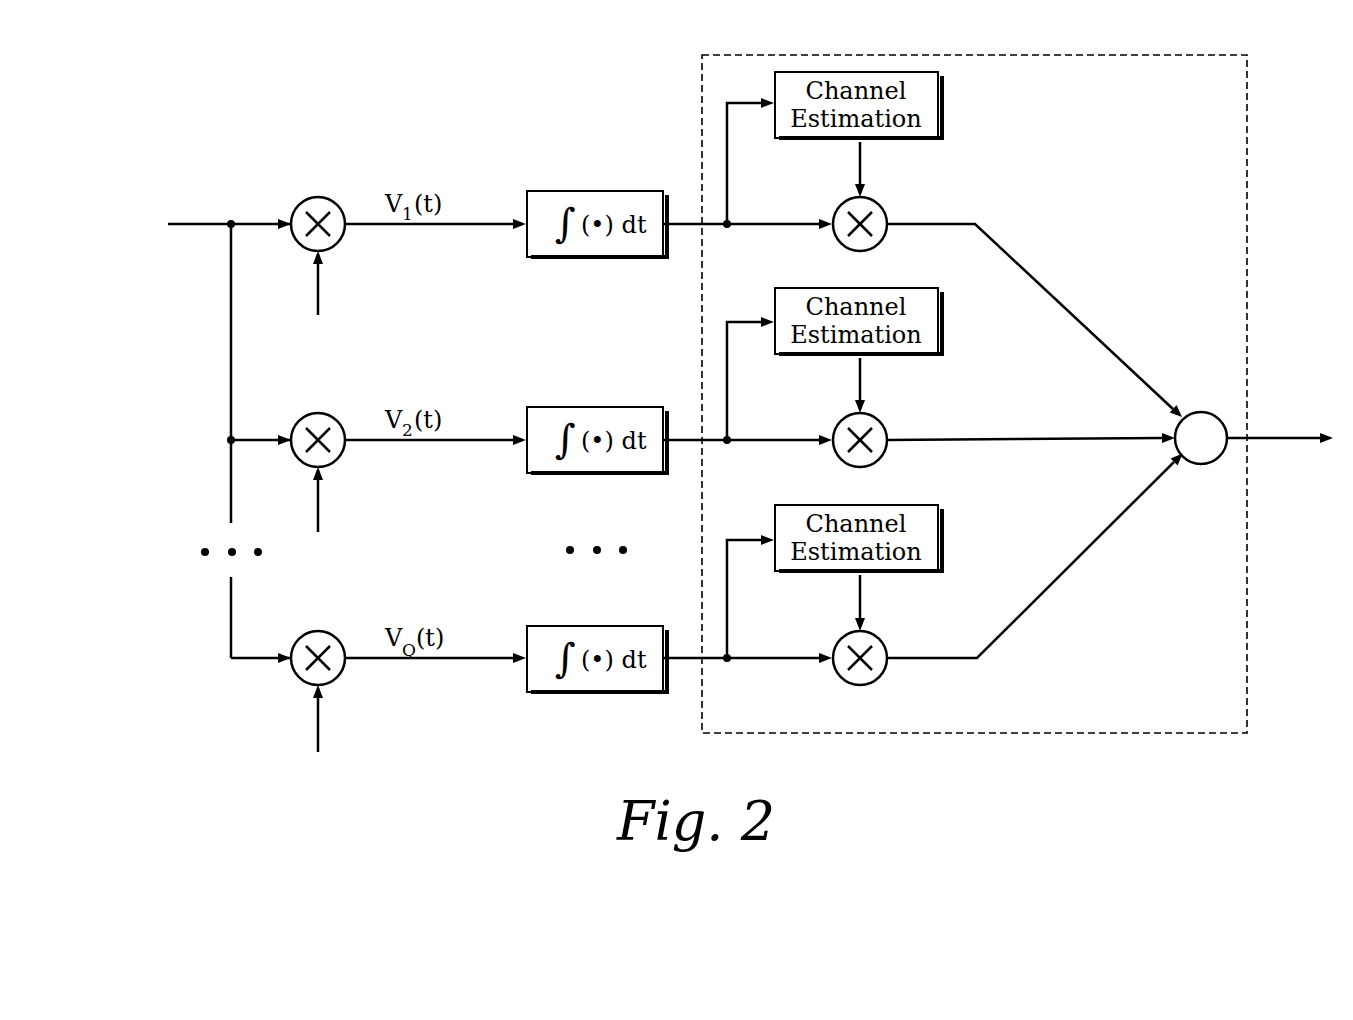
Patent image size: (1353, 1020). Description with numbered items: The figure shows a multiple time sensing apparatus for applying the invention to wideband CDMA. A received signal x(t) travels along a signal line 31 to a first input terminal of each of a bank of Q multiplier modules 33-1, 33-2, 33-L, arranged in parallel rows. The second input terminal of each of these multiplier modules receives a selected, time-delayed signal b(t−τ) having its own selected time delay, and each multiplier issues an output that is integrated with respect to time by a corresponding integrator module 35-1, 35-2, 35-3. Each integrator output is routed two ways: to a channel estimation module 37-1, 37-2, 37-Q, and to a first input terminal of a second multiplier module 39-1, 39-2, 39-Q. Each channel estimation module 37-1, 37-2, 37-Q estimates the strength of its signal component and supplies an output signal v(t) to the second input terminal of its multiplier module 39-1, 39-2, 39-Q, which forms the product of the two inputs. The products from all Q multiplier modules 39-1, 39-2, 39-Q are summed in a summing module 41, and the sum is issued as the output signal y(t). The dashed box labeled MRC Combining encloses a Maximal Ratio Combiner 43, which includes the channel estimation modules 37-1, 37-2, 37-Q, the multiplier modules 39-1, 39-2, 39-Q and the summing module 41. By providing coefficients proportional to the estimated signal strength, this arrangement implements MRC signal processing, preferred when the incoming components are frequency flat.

The signal line 31 is at (192, 229).
The multiplier module 33-1 is at (333, 182).
The multiplier module 33-2 is at (333, 398).
The multiplier module 33-L is at (333, 616).
The integrator module 35-1 is at (541, 191).
The integrator module 35-2 is at (541, 408).
The integrator module 35-3 is at (541, 625).
The channel estimation module 37-1 is at (941, 102).
The channel estimation module 37-2 is at (941, 318).
The channel estimation module 37-Q is at (941, 535).
The multiplier module 39-1 is at (882, 238).
The multiplier module 39-2 is at (882, 454).
The multiplier module 39-Q is at (882, 672).
The summing module 41 is at (1207, 412).
The Maximal Ratio Combiner 43 is at (861, 53).